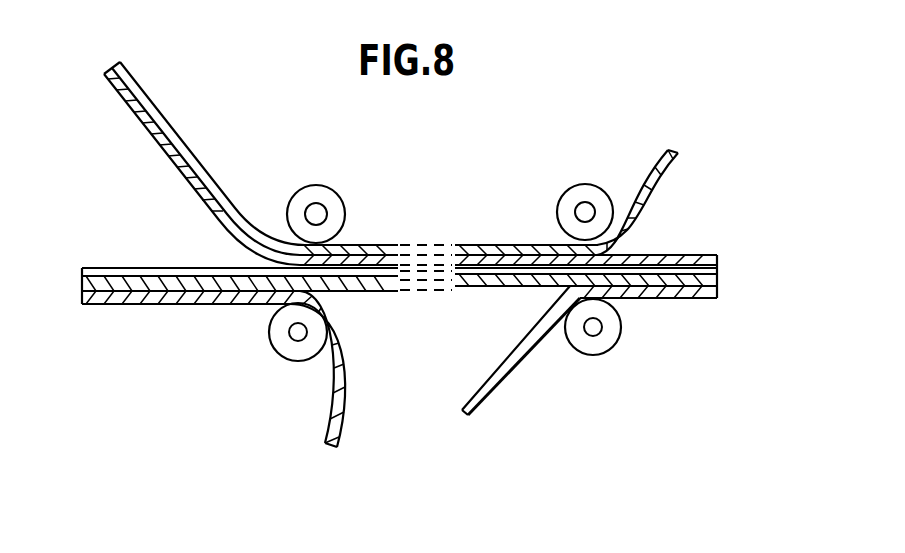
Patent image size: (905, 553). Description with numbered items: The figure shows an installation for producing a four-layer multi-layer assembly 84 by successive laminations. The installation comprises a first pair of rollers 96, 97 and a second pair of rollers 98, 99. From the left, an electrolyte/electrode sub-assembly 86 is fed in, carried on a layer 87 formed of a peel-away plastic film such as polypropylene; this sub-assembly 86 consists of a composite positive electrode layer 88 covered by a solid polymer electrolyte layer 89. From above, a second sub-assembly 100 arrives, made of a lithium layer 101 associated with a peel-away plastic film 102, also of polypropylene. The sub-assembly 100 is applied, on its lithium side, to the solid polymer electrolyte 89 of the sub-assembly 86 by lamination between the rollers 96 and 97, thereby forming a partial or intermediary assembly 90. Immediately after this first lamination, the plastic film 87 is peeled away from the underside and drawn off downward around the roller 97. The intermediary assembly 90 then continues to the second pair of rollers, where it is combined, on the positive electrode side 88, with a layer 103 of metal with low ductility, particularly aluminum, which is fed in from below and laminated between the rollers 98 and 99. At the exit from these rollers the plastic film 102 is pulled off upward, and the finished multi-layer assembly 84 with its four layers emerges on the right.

The multi-layer assembly 84 is at (724, 296).
The electrolyte/electrode sub-assembly 86 is at (74, 299).
The layer of peel-away plastic film 87 is at (147, 305).
The composite positive electrode layer 88 is at (96, 285).
The solid polymer electrolyte layer 89 is at (163, 273).
The intermediary assembly 90 is at (384, 236).
The roller 96 is at (324, 190).
The roller 97 is at (283, 345).
The roller 98 is at (577, 186).
The roller 99 is at (607, 345).
The sub-assembly 100 is at (96, 56).
The lithium layer 101 is at (117, 97).
The peel-away plastic film 102 is at (155, 108).
The layer of metal with low ductility 103 is at (519, 372).